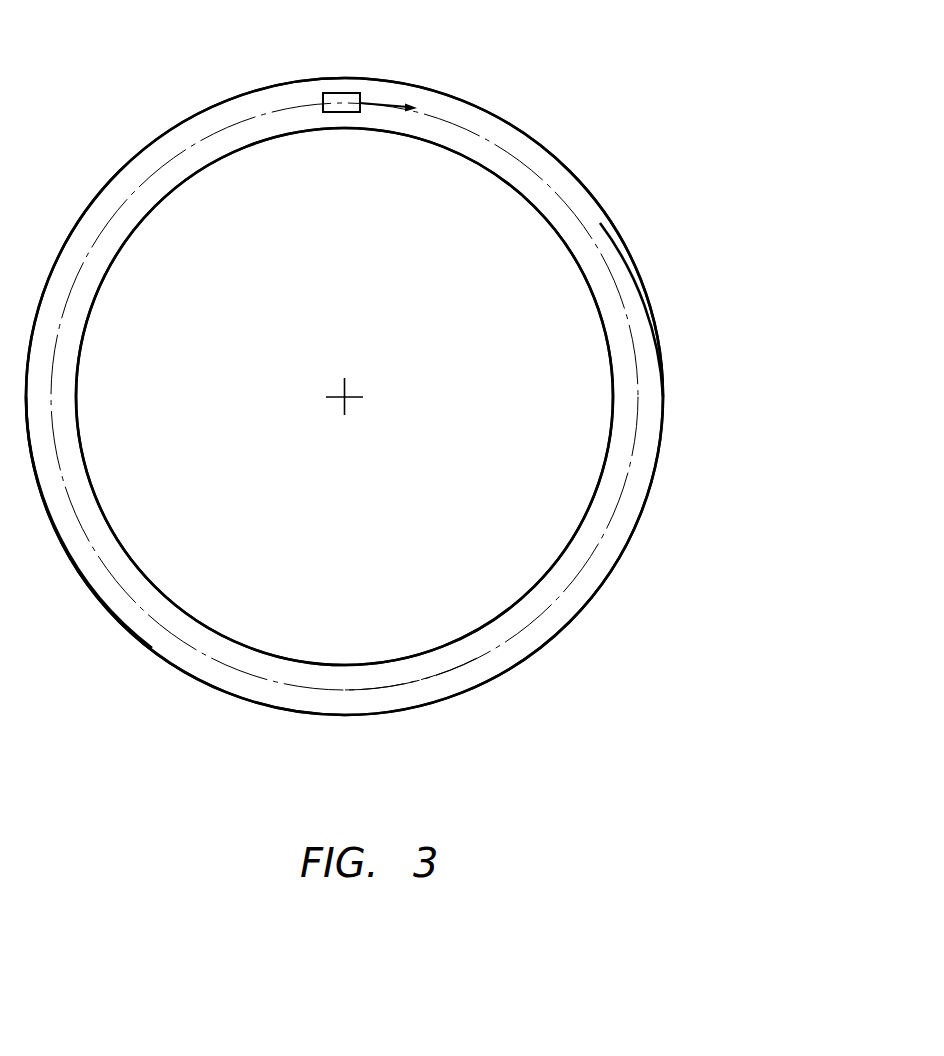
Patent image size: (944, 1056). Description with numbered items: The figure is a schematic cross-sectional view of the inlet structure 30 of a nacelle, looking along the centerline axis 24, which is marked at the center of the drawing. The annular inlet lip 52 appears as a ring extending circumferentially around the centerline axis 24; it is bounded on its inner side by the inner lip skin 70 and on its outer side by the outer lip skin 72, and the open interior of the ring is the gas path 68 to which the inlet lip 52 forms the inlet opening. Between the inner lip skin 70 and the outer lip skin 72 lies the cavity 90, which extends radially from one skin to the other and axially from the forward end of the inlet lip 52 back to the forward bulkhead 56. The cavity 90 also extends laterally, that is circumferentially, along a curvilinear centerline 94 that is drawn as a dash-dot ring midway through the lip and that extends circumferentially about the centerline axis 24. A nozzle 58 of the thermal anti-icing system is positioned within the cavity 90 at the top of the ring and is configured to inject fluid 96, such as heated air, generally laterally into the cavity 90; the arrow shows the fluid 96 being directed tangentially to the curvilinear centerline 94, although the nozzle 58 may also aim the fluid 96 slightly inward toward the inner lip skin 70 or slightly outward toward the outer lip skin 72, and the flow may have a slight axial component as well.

The inlet structure 30 is at (572, 102).
The centerline axis 24 is at (340, 400).
The inlet lip 52 is at (665, 395).
The forward bulkhead 56 is at (600, 223).
The nozzle 58 is at (340, 114).
The gas path 68 is at (247, 315).
The inner lip skin 70 is at (597, 315).
The outer lip skin 72 is at (647, 293).
The cavity 90 is at (152, 648).
The curvilinear centerline 94 is at (477, 658).
The fluid 96 is at (393, 110).